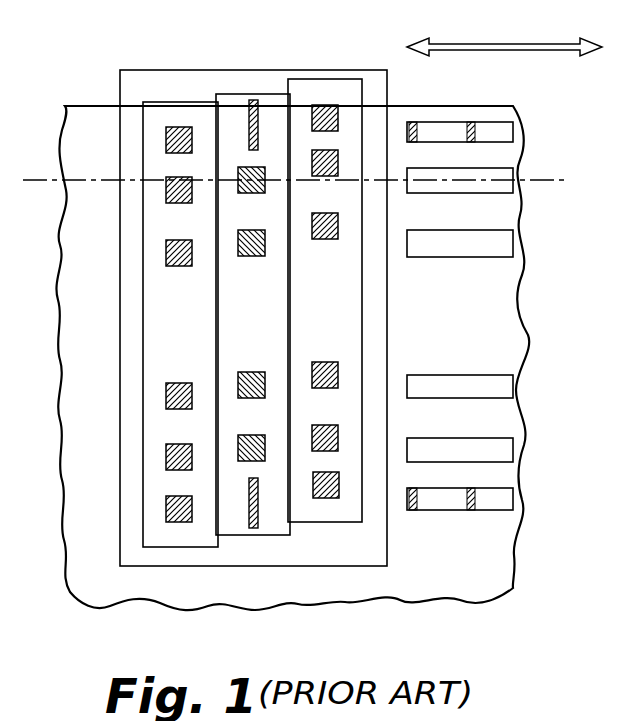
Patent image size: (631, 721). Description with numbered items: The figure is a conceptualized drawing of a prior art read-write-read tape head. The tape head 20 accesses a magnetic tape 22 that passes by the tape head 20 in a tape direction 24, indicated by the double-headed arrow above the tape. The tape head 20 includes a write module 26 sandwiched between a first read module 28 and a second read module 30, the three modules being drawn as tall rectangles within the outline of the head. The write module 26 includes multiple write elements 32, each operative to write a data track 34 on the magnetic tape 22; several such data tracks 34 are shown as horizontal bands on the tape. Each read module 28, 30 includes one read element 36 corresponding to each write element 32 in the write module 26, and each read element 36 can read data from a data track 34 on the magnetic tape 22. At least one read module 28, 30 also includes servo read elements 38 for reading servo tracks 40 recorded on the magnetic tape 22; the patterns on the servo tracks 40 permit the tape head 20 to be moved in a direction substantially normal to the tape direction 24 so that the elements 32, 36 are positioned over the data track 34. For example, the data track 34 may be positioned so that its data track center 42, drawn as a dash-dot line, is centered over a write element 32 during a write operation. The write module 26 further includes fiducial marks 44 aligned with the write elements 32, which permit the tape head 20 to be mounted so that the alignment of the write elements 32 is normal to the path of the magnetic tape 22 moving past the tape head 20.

The tape head 20 is at (160, 70).
The magnetic tape 22 is at (500, 106).
The tape direction 24 is at (527, 50).
The write module 26 is at (255, 535).
The first read module 28 is at (177, 547).
The second read module 30 is at (340, 522).
The write elements 32 is at (258, 193).
The data track 34 is at (430, 193).
The read element 36 is at (166, 190).
The servo read elements 38 is at (166, 140).
The servo tracks 40 is at (430, 142).
The data track center 42 is at (83, 182).
The fiducial marks 44 is at (249, 135).